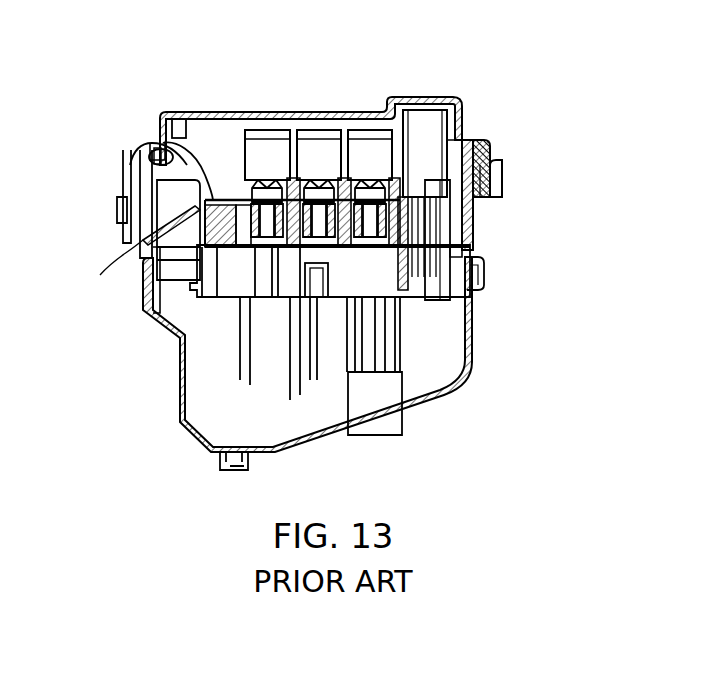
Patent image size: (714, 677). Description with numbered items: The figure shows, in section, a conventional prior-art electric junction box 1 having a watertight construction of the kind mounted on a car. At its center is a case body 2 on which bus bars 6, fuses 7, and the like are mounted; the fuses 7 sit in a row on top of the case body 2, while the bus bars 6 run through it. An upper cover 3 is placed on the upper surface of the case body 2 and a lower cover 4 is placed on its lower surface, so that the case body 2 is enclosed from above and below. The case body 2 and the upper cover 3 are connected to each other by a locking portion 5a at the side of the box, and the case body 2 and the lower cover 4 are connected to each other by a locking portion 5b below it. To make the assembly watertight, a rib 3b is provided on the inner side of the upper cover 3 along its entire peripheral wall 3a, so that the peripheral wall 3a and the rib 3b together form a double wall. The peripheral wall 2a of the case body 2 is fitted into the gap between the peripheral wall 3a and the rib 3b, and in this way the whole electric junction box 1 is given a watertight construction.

The electric junction box 1 is at (172, 92).
The case body 2 is at (148, 237).
The peripheral wall of the case body 2a is at (458, 183).
The upper cover 3 is at (463, 103).
The peripheral wall of the upper cover 3a is at (488, 150).
The rib 3b is at (452, 108).
The lower cover 4 is at (183, 380).
The locking portion 5a is at (495, 182).
The locking portion 5b is at (485, 288).
The bus bar 6 is at (160, 150).
The fuse 7 is at (268, 150).